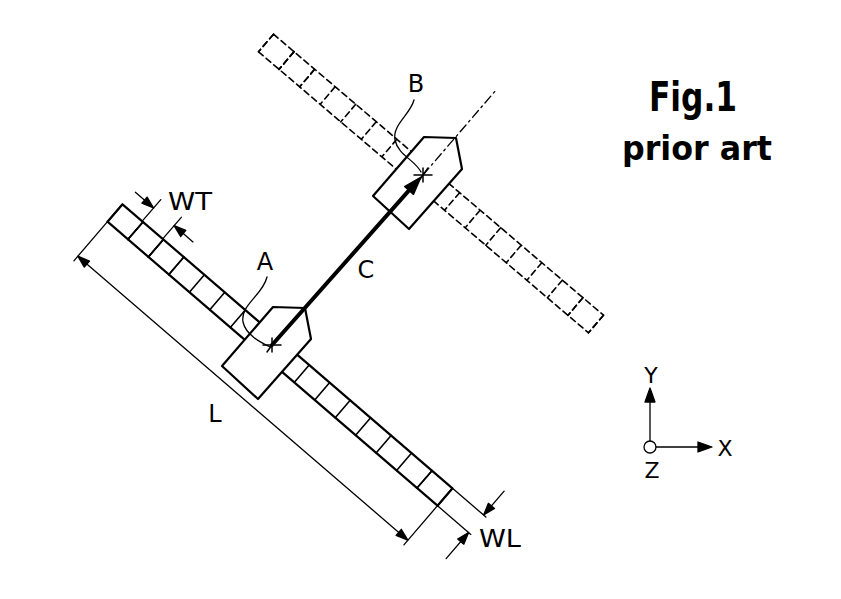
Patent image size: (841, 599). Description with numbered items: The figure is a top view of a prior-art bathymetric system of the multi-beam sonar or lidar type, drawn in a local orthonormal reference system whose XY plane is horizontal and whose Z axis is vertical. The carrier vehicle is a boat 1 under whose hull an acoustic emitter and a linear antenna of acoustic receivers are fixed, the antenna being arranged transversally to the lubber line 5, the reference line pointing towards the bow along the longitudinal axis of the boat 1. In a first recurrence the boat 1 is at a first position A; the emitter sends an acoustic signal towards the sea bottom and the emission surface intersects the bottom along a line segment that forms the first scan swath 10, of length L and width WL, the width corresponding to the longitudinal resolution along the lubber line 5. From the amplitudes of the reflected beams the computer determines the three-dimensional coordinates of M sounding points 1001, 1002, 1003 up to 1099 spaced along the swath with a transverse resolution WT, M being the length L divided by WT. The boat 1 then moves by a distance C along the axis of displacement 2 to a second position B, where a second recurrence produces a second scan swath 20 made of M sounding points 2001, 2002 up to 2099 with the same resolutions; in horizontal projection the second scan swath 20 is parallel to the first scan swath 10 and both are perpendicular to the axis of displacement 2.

The boat 1 is at (312, 327).
The axis of displacement 2 is at (380, 223).
The lubber line 5 is at (494, 94).
The first scan swath 10 is at (108, 221).
The second scan swath 20 is at (264, 53).
The sounding point 1001 is at (122, 202).
The sounding point 1002 is at (142, 243).
The sounding point 1003 is at (167, 257).
The sounding point 1099 is at (433, 483).
The sounding point 2001 is at (281, 48).
The sounding point 2002 is at (304, 62).
The sounding point 2099 is at (594, 312).